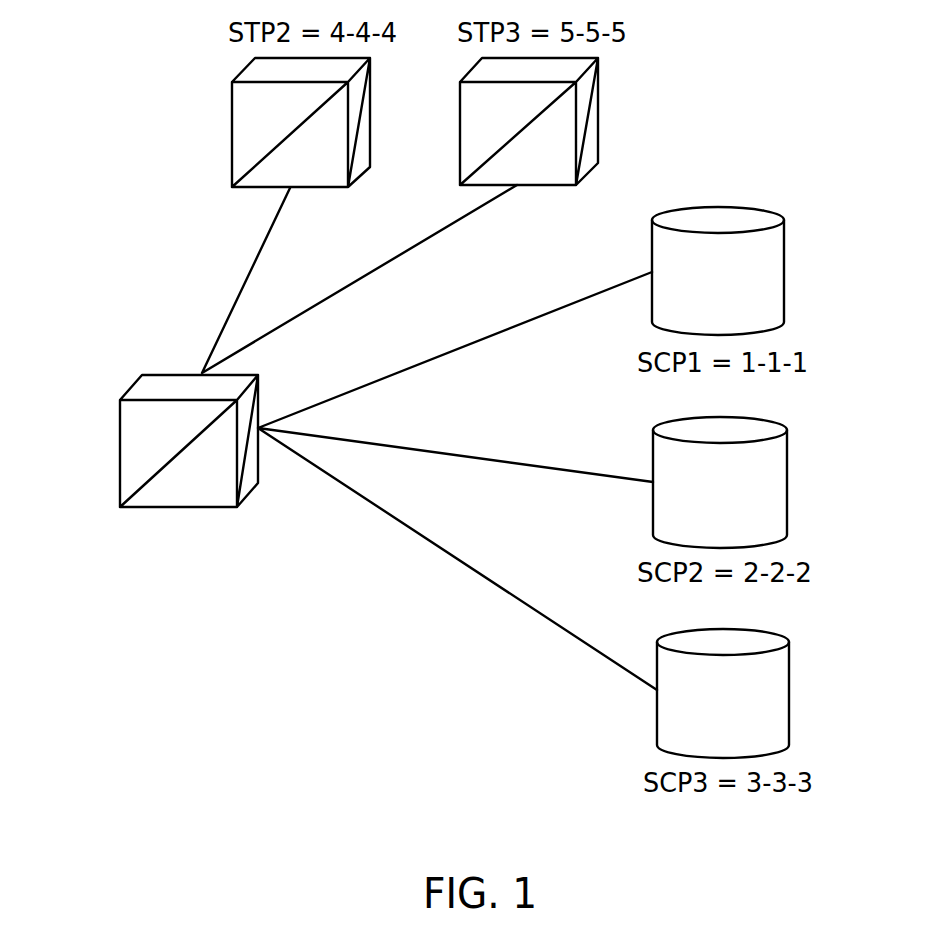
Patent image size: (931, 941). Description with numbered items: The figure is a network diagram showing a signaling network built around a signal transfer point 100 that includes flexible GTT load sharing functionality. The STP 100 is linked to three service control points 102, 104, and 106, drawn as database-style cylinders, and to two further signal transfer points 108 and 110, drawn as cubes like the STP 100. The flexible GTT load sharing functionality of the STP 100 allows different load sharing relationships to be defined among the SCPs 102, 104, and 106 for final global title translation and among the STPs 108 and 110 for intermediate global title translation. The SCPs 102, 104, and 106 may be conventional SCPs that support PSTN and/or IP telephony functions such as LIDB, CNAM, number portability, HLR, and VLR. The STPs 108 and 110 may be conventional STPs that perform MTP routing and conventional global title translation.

The signal transfer point 100 is at (118, 425).
The service control point 102 is at (785, 269).
The service control point 104 is at (786, 480).
The service control point 106 is at (789, 690).
The signal transfer point 108 is at (232, 107).
The signal transfer point 110 is at (600, 103).